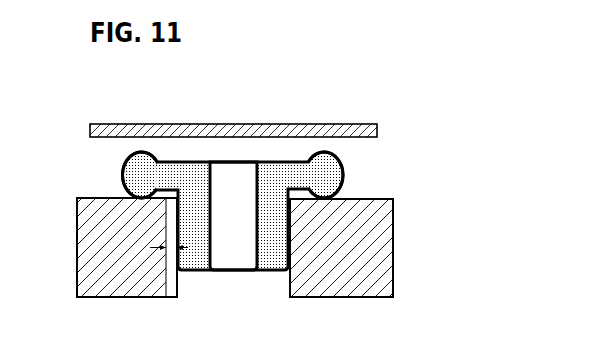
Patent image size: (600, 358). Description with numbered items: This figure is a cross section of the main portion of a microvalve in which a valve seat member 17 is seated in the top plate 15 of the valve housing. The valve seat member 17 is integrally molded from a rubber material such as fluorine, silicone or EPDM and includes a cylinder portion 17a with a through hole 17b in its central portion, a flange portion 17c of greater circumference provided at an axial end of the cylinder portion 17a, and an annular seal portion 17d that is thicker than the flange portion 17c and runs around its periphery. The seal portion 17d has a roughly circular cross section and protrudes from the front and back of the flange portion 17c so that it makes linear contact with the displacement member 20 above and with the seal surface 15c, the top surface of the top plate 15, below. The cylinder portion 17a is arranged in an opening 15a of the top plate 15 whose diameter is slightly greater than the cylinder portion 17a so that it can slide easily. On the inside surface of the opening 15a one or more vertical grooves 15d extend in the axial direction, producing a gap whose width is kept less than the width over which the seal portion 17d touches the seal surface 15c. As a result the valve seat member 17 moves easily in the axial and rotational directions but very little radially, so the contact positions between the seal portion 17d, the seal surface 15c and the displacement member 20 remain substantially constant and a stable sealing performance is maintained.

The displacement member 20 is at (116, 123).
The valve seat member 17 is at (220, 213).
The cylinder portion 17a is at (196, 268).
The through hole 17b is at (243, 255).
The flange portion 17c is at (299, 160).
The seal portion 17d is at (327, 157).
The top plate 15 is at (244, 254).
The opening 15a is at (284, 281).
The seal surface 15c is at (108, 198).
The vertical groove 15d is at (172, 276).